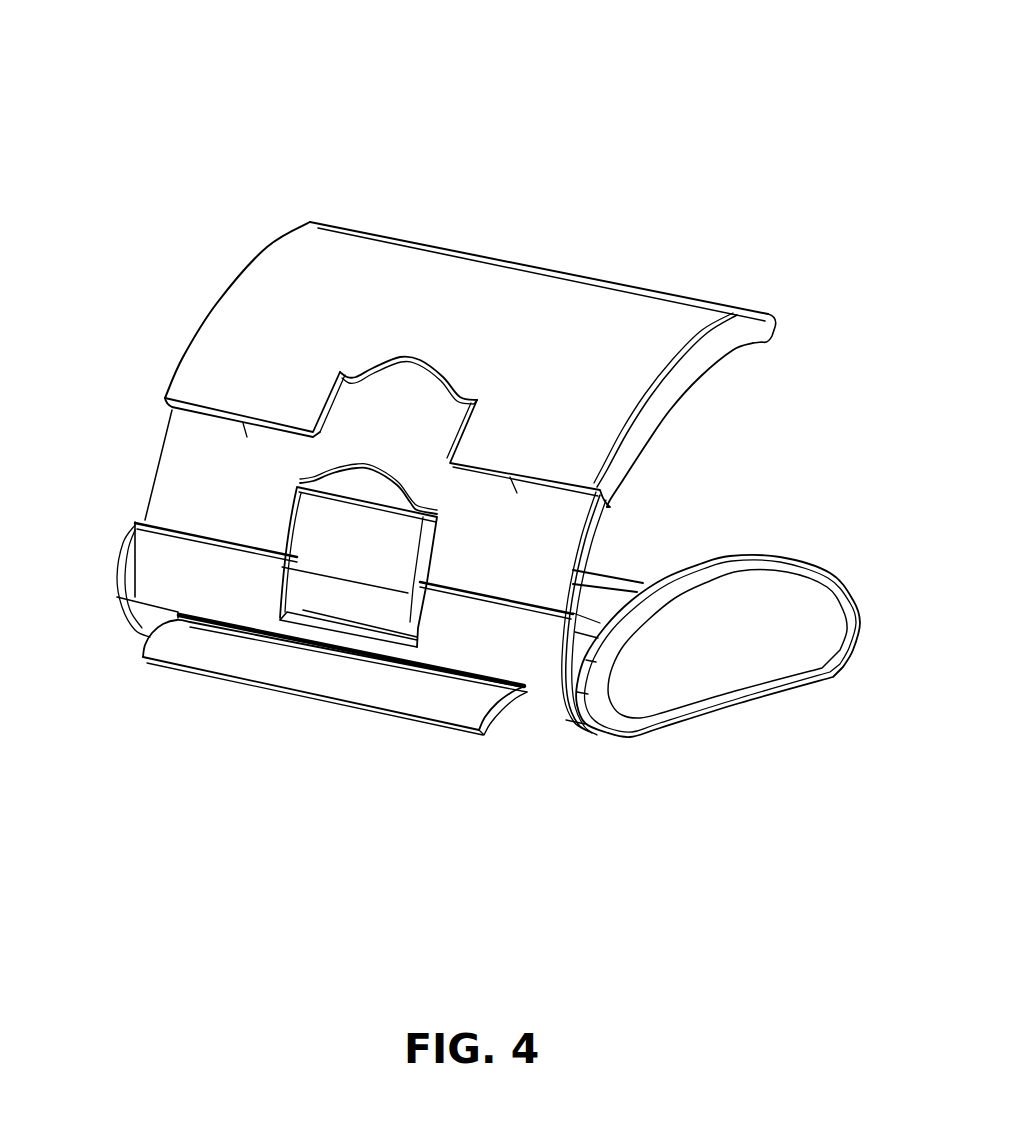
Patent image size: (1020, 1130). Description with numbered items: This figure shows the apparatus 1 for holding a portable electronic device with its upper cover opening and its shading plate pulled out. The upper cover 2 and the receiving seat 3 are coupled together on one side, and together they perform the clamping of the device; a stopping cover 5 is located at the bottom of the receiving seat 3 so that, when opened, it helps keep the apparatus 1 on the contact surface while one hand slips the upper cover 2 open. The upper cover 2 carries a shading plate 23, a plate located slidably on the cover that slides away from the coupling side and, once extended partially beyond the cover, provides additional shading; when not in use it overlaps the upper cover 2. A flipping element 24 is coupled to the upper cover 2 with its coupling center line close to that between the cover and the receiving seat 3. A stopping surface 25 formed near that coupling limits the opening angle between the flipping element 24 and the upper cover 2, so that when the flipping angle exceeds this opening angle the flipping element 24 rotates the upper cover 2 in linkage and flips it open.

The apparatus for holding portable electronic device 1 is at (373, 155).
The upper cover 2 is at (195, 467).
The shading plate 23 is at (420, 285).
The flipping element 24 is at (315, 513).
The stopping surface 25 is at (400, 637).
The stopping cover 5 is at (305, 670).
The receiving seat 3 is at (767, 657).